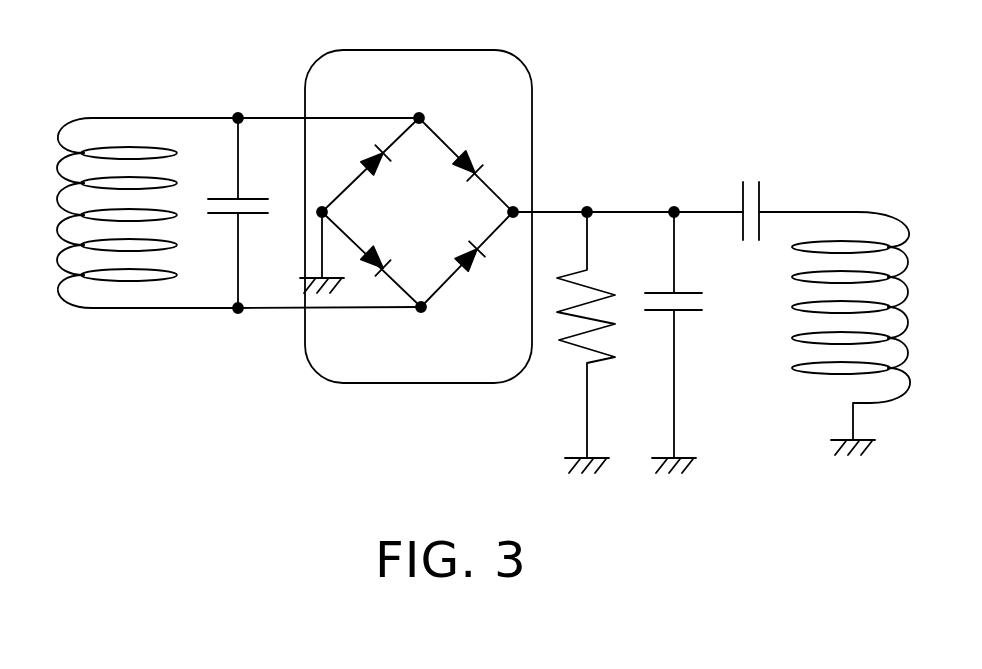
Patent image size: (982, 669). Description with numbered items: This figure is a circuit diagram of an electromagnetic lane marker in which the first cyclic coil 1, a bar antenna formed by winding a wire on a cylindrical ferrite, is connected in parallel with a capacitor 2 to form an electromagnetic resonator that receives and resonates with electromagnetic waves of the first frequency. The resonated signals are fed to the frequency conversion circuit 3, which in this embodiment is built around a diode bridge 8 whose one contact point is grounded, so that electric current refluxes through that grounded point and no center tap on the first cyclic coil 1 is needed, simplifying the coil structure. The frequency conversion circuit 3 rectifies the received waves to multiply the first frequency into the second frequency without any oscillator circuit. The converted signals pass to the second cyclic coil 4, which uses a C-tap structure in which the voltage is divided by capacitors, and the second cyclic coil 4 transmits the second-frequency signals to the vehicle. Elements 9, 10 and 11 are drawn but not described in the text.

The first cyclic coil 1 is at (112, 118).
The capacitor 2 is at (229, 215).
The frequency conversion circuit 3 is at (482, 50).
The second cyclic coil 4 is at (858, 211).
The diode bridge 8 is at (600, 361).
The capacitor 9 is at (762, 197).
The smoothing capacitor 10 is at (692, 311).
The diode 11 is at (483, 253).